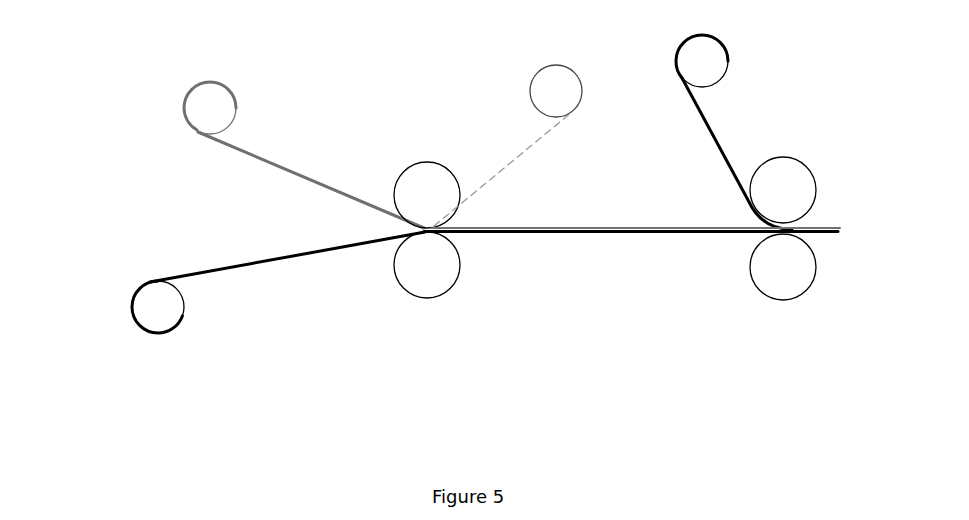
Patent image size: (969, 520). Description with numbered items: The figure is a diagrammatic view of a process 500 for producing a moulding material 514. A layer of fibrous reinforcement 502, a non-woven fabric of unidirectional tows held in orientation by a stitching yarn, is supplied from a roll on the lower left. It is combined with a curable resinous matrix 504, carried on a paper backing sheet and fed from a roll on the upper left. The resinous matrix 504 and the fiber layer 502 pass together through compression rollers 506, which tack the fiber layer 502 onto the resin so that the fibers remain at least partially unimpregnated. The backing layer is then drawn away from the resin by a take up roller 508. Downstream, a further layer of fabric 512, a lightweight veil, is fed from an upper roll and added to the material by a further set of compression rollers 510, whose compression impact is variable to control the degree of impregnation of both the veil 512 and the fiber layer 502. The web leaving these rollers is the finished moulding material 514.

The process 500 is at (126, 74).
The layer of fibrous reinforcement 502 is at (287, 260).
The curable resinous matrix 504 is at (308, 180).
The compression rollers 506 is at (427, 211).
The take up roller 508 is at (547, 138).
The further set of compression rollers 510 is at (786, 177).
The further layer of fabric 512 is at (710, 130).
The moulding material 514 is at (838, 229).